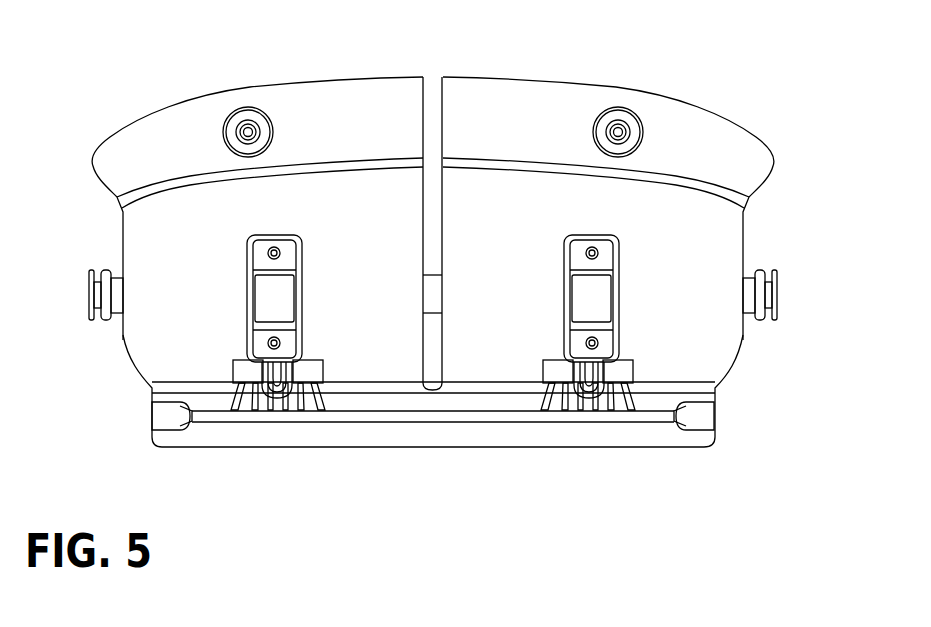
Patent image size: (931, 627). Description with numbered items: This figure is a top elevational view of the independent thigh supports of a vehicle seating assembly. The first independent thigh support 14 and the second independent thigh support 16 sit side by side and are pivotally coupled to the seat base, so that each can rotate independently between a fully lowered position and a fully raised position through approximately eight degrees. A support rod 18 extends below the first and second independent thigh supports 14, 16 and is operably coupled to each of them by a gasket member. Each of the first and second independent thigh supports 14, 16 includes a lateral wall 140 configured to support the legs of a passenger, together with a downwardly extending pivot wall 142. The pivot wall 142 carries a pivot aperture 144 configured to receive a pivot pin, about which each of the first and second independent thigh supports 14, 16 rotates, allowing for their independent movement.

The first independent thigh support 14 is at (505, 98).
The second independent thigh support 16 is at (340, 100).
The support rod 18 is at (750, 283).
The lateral wall 140 is at (348, 264).
The pivot wall 142 is at (550, 432).
The pivot aperture 144 is at (700, 415).